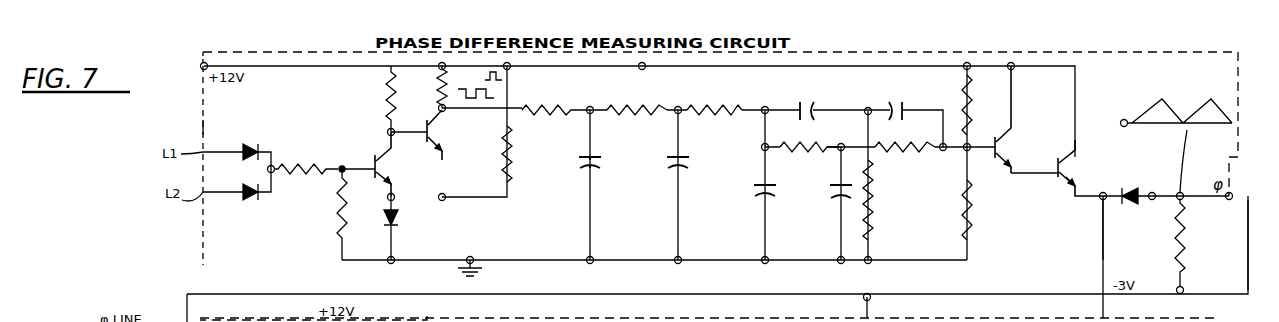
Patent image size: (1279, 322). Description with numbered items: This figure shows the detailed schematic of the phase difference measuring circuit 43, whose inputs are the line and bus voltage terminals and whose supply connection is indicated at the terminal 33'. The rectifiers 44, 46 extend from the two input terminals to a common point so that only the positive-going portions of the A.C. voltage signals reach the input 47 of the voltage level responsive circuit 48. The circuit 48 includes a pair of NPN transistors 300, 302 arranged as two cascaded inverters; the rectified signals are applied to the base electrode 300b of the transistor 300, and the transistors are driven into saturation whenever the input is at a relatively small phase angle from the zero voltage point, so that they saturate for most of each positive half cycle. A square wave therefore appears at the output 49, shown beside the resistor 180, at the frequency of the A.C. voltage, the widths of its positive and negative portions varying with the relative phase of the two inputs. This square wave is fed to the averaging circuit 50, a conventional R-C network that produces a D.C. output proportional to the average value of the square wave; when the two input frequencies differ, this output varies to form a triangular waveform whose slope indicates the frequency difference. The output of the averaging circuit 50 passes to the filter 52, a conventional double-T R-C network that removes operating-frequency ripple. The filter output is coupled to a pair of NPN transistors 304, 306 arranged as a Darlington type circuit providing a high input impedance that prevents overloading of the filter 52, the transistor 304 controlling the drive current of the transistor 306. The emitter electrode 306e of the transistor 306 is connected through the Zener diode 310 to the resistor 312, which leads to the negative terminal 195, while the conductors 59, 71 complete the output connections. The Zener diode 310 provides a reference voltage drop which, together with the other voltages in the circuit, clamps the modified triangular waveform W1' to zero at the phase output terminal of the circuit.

The +12V supply terminal 33' is at (190, 54).
The phase difference measuring circuit 43 is at (200, 125).
The rectifier 44 is at (252, 142).
The rectifier 46 is at (262, 198).
The input 47 is at (274, 166).
The voltage level responsive circuit 48 is at (386, 142).
The output 49 is at (445, 110).
The averaging circuit 50 is at (683, 104).
The filter 52 is at (853, 104).
The resistor with pulse output 180 is at (469, 86).
The NPN transistor 300 is at (430, 160).
The base electrode 300b is at (372, 168).
The NPN transistor 302 is at (446, 149).
The NPN transistor 304 is at (998, 162).
The NPN transistor 306 is at (1068, 180).
The emitter electrode 306e is at (1070, 174).
The conductor 59 is at (1101, 222).
The Zener diode 310 is at (1126, 200).
The resistor 312 is at (1178, 234).
The conductor 71 is at (1247, 226).
The negative terminal 195 is at (1184, 289).
The modified triangular waveform W1' is at (1177, 137).